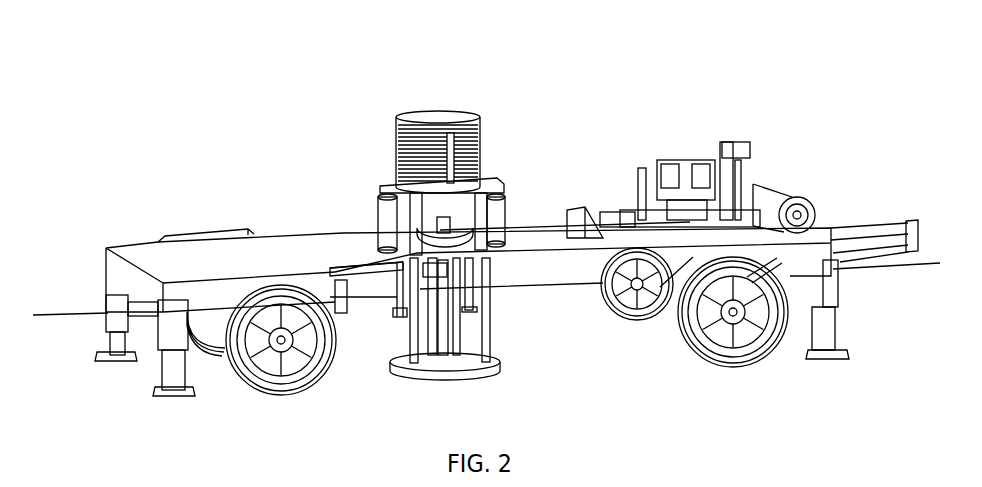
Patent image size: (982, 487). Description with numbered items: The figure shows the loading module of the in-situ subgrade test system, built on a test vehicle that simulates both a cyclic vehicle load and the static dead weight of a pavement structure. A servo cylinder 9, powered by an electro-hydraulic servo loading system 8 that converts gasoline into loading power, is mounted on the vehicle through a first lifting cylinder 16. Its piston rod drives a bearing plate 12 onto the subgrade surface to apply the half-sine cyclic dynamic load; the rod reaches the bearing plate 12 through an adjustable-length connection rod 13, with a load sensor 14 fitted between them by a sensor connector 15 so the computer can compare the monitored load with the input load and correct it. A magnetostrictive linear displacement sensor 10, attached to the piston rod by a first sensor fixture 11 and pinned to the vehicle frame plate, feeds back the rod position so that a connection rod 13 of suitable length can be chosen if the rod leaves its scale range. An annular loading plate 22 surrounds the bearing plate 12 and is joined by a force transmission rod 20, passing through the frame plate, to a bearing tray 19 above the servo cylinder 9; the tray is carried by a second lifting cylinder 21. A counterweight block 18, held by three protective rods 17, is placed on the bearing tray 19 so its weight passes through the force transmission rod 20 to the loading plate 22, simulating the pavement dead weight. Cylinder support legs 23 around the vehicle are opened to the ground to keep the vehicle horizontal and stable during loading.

The electro-hydraulic servo loading system 8 is at (685, 157).
The servo cylinder 9 is at (385, 232).
The magnetostrictive linear displacement sensor 10 is at (398, 176).
The first sensor fixture 11 is at (447, 212).
The bearing plate 12 is at (467, 357).
The connection rod 13 is at (457, 357).
The load sensor 14 is at (427, 280).
The sensor connector 15 is at (377, 253).
The first lifting cylinder 16 is at (503, 230).
The protective rod 17 is at (480, 117).
The counterweight block 18 is at (437, 113).
The bearing tray 19 is at (403, 133).
The force transmission rod 20 is at (410, 340).
The second lifting cylinder 21 is at (378, 198).
The loading plate 22 is at (497, 347).
The cylinder support leg 23 is at (106, 293).